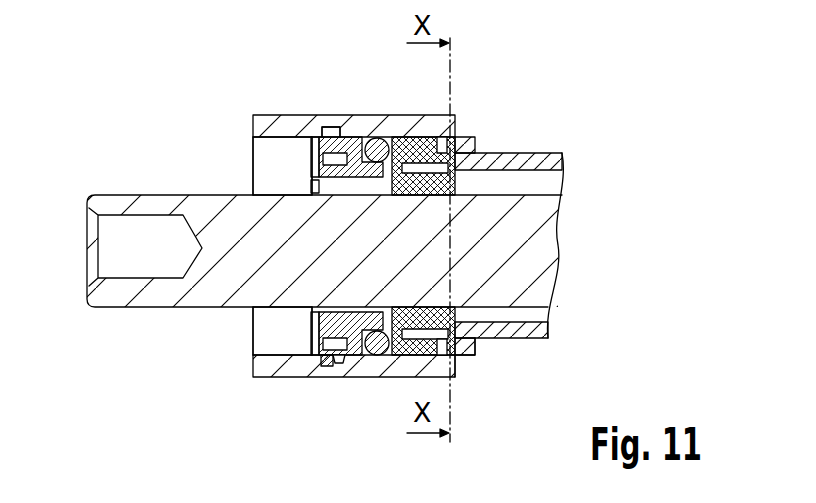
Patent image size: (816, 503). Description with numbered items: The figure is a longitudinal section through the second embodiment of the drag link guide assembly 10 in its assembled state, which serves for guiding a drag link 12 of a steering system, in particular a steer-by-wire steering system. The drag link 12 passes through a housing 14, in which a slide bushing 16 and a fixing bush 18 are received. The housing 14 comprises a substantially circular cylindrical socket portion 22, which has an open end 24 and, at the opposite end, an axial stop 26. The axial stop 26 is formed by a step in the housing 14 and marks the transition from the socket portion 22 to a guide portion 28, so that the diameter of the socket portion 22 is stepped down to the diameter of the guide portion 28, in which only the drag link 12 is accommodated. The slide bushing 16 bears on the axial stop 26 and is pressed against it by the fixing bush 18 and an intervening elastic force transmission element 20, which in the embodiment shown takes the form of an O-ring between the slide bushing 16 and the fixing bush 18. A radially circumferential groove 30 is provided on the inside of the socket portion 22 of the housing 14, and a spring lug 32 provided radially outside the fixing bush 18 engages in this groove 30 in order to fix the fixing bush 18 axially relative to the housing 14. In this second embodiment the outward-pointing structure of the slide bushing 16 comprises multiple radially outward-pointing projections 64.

The drag link guide assembly 10 is at (208, 92).
The drag link 12 is at (208, 300).
The housing 14 is at (318, 130).
The slide bushing 16 is at (411, 153).
The fixing bush 18 is at (370, 142).
The elastic force transmission element 20 is at (385, 138).
The socket portion 22 is at (268, 115).
The open end 24 is at (278, 168).
The axial stop 26 is at (464, 130).
The guide portion 28 is at (538, 153).
The groove 30 is at (343, 364).
The spring lug 32 is at (327, 367).
The radially outward-pointing projections 64 is at (457, 373).